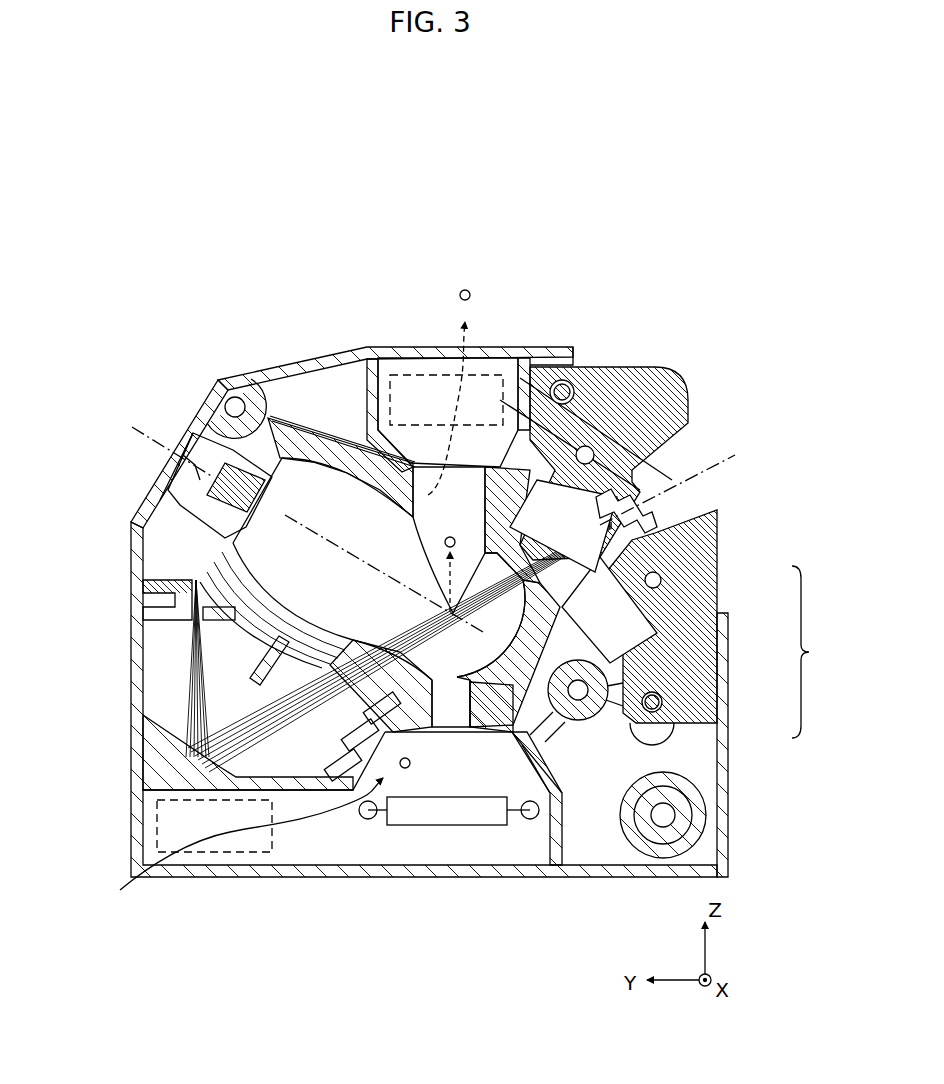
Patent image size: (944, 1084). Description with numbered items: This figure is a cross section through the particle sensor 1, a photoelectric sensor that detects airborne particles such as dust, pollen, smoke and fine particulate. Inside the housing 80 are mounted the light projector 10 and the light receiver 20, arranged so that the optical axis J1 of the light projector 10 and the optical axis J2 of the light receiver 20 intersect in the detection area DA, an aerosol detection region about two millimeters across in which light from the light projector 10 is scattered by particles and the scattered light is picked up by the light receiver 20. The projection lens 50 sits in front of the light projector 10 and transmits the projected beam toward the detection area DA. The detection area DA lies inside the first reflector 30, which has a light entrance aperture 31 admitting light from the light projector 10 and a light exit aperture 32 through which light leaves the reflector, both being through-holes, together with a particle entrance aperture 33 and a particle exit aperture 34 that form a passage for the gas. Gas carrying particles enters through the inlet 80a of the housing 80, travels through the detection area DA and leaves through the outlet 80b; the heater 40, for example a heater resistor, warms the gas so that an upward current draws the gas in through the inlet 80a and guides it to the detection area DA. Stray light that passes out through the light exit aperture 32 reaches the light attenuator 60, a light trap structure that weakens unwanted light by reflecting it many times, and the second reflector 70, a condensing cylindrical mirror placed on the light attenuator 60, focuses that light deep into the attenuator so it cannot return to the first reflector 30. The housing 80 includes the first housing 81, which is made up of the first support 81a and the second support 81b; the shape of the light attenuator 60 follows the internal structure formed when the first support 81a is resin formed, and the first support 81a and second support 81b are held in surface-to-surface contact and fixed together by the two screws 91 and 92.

The particle sensor 1 is at (747, 352).
The light projector 10 is at (648, 488).
The light receiver 20 is at (220, 490).
The first reflector 30 is at (333, 460).
The light entrance aperture 31 is at (590, 400).
The light exit aperture 32 is at (388, 738).
The particle entrance aperture 33 is at (450, 722).
The particle exit aperture 34 is at (440, 490).
The heater 40 is at (397, 817).
The projection lens 50 is at (632, 432).
The light attenuator 60 is at (175, 648).
The second reflector 70 is at (165, 735).
The housing 80 is at (488, 612).
The inlet 80a is at (233, 852).
The outlet 80b is at (483, 375).
The first housing 81 is at (817, 652).
The first support 81a is at (722, 738).
The second support 81b is at (700, 600).
The screw 91 is at (565, 382).
The screw 92 is at (672, 722).
The optical axis of light projector J1 is at (722, 459).
The optical axis of light receiver J2 is at (140, 425).
The detection area DA is at (433, 613).